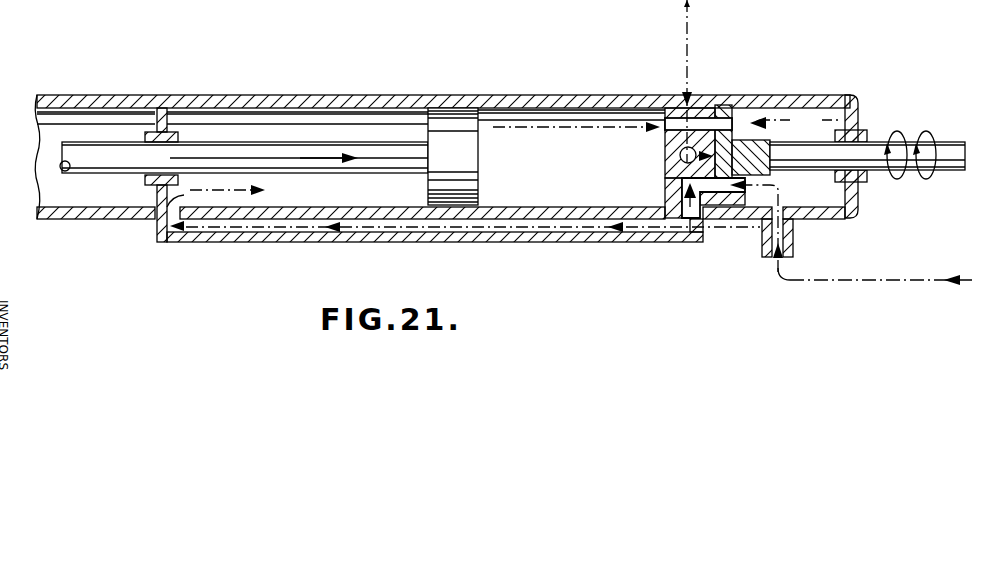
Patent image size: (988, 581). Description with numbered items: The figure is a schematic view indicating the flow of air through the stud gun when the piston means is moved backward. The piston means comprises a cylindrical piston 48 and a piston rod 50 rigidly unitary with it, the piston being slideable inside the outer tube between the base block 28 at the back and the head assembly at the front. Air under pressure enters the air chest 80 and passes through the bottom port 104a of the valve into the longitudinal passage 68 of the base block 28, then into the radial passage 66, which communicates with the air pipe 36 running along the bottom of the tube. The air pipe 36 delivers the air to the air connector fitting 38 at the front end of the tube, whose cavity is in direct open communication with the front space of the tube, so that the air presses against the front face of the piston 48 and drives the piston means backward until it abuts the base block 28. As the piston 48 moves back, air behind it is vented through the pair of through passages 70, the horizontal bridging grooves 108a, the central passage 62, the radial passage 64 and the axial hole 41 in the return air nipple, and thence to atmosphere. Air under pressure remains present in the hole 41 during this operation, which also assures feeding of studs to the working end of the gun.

The base block 28 is at (665, 178).
The air pipe 36 is at (503, 242).
The air connector fitting 38 is at (157, 236).
The axial passage 41 is at (701, 81).
The piston 48 is at (470, 150).
The piston rod 50 is at (60, 165).
The central passage 62 is at (724, 105).
The radial passage 64 is at (680, 157).
The radial passage 66 is at (695, 212).
The longitudinal passage 68 is at (720, 205).
The through passages 70 is at (670, 105).
The air chest 80 is at (867, 145).
The bottom port 104a is at (797, 279).
The bridge grooves 108a is at (760, 118).